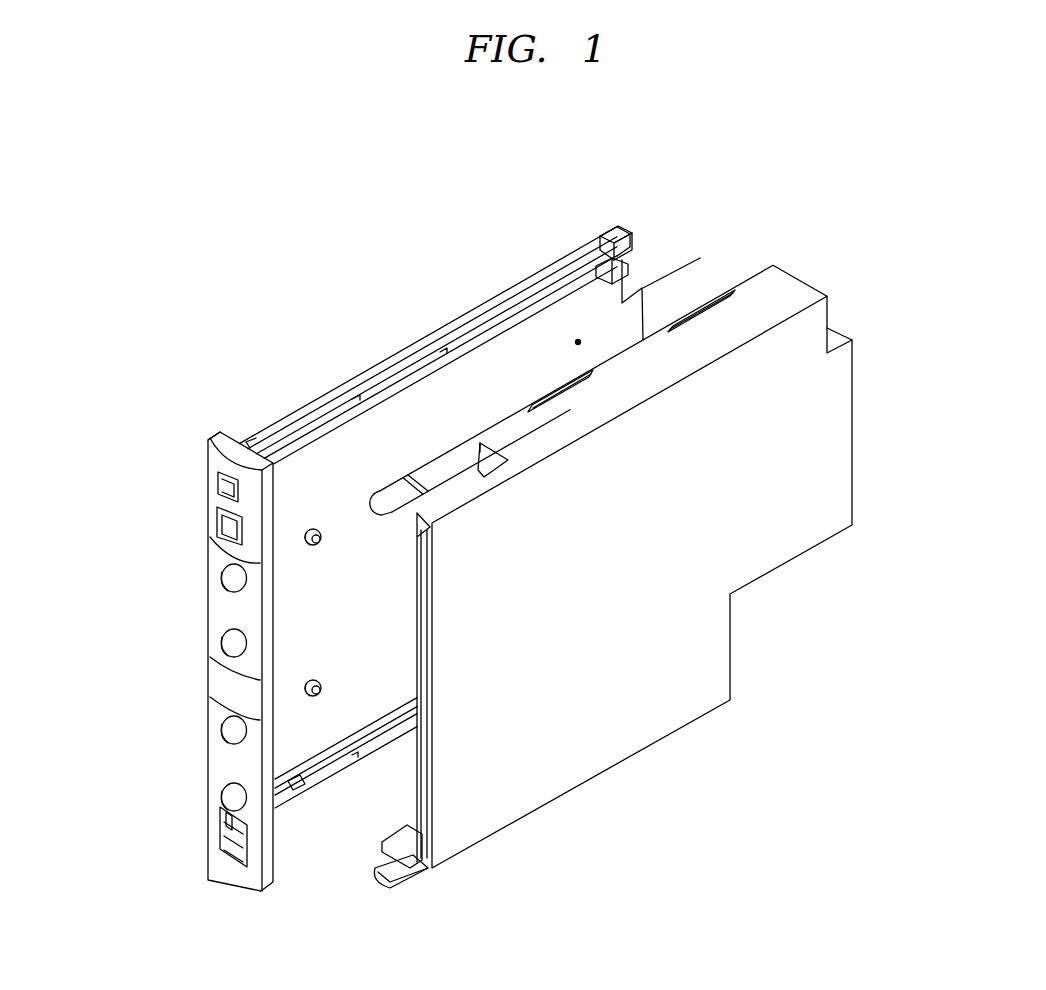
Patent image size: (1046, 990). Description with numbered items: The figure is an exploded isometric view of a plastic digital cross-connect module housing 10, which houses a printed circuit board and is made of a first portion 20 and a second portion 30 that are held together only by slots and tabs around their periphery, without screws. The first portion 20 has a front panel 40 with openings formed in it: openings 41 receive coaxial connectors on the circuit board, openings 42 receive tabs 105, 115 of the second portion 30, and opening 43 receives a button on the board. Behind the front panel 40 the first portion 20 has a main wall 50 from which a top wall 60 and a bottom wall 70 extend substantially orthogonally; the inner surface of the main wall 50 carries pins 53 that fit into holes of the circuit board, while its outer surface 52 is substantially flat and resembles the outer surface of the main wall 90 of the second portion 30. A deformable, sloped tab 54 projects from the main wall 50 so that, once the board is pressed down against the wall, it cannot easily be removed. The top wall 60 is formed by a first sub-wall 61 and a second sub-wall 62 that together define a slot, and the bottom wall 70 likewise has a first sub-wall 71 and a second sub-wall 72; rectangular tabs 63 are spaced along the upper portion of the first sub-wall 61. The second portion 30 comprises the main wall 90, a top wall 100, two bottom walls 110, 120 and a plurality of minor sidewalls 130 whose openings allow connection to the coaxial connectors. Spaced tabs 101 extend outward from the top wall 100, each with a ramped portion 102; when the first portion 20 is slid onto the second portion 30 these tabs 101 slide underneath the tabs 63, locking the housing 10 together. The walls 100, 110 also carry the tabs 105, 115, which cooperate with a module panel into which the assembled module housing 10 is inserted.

The module housing 10 is at (790, 161).
The first portion 20 is at (434, 565).
The second portion 30 is at (803, 280).
The front panel 40 is at (242, 884).
The openings 41 is at (225, 577).
The openings 42 is at (218, 486).
The opening 43 is at (220, 522).
The main wall 50 is at (398, 410).
The outer surface 52 is at (340, 385).
The pins 53 is at (311, 547).
The tab 54 is at (622, 278).
The top wall 60 is at (434, 315).
The first sub-wall 61 is at (527, 305).
The second sub-wall 62 is at (482, 338).
The tabs 63 is at (450, 327).
The bottom wall 70 is at (346, 798).
The first sub-wall 71 is at (357, 748).
The second sub-wall 72 is at (357, 731).
The main wall 90 is at (641, 590).
The top wall 100 is at (632, 385).
The tabs 101 is at (690, 320).
The ramped portion 102 is at (675, 340).
The tab 105 is at (450, 460).
The bottom wall 110 is at (389, 748).
The tab 115 is at (407, 873).
The bottom wall 120 is at (790, 563).
The minor sidewalls 130 is at (827, 318).